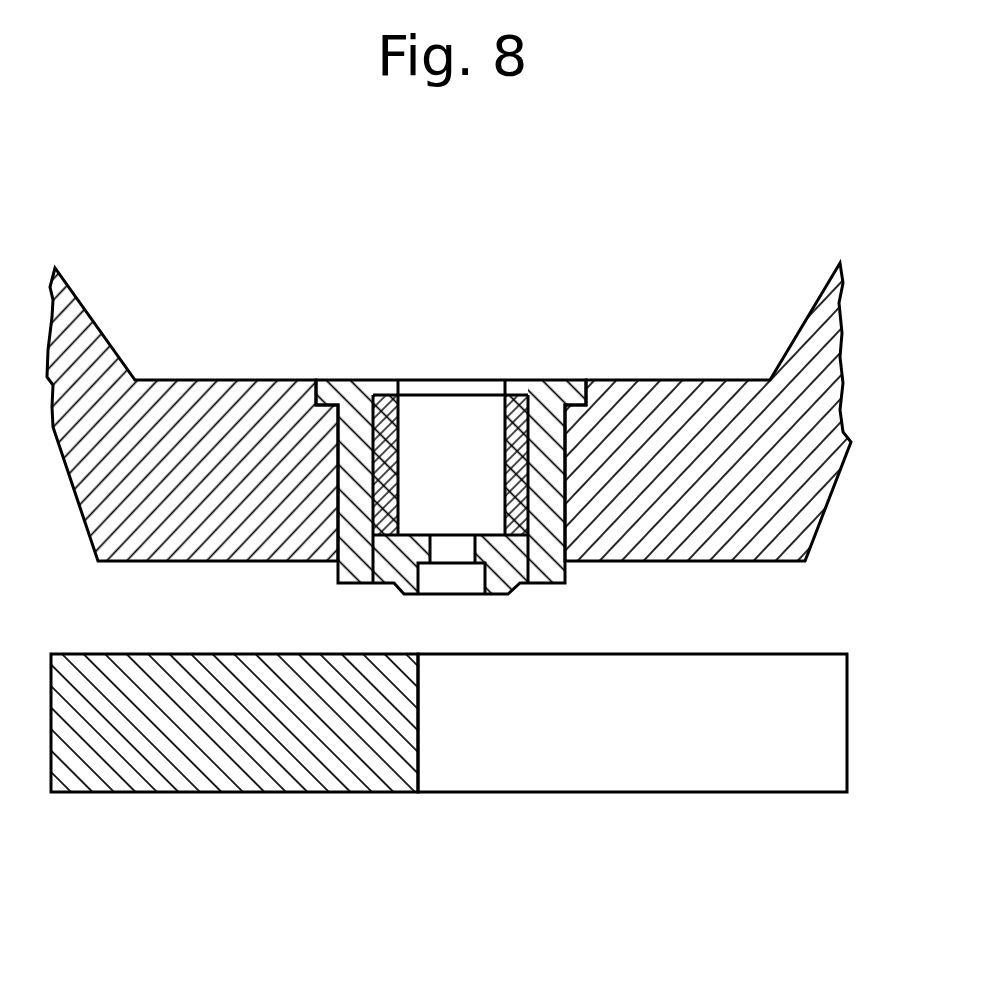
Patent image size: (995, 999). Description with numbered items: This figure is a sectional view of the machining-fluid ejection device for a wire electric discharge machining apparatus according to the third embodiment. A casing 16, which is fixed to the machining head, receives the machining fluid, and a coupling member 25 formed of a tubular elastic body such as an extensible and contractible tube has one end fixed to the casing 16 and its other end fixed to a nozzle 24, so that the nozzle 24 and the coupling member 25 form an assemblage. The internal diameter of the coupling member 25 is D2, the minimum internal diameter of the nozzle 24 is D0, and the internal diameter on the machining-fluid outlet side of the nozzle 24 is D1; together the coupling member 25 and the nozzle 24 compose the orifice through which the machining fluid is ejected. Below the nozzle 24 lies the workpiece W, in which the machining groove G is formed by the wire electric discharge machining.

The casing 16 is at (224, 390).
The nozzle 24 is at (510, 563).
The coupling member 25 is at (513, 400).
The internal diameter of the coupling member D2 is at (505, 457).
The minimum internal diameter of the nozzle D0 is at (475, 550).
The internal diameter of the machining-fluid outlet side D1 is at (418, 580).
The workpiece W is at (218, 772).
The machining groove G is at (537, 770).